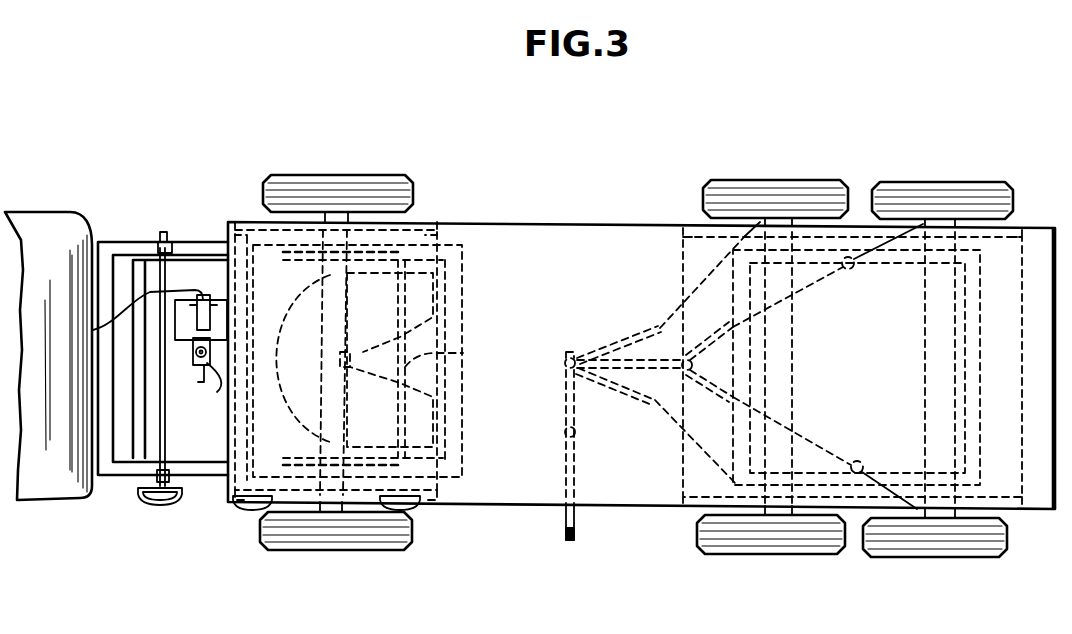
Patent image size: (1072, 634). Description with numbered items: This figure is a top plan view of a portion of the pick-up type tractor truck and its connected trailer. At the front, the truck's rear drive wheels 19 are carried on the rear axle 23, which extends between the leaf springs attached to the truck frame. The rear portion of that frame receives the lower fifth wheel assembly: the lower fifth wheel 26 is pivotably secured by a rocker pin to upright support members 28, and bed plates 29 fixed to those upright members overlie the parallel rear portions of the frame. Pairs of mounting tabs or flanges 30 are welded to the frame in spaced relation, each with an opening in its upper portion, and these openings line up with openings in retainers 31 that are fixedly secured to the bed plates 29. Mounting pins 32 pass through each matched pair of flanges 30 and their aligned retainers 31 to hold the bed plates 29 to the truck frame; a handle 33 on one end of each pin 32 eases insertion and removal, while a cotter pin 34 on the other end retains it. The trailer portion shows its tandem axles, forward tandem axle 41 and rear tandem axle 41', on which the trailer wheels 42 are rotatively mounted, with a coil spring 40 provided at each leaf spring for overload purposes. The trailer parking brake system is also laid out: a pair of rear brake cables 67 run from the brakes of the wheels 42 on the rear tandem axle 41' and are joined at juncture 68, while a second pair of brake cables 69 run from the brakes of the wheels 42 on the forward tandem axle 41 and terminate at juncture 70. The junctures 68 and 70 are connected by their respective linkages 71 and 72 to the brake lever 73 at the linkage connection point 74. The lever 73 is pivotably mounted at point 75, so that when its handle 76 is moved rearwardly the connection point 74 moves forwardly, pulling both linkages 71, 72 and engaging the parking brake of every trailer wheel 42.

The rear directionally fixed drive wheels 19 is at (395, 177).
The rear axle 23 is at (345, 323).
The lower fifth wheel 26 is at (430, 295).
The upright support members 28 is at (405, 222).
The bed plates 29 is at (197, 255).
The mounting tabs or flanges 30 is at (178, 246).
The retainers 31 is at (160, 236).
The mounting pins 32 is at (463, 353).
The handle 33 is at (153, 505).
The cotter pin 34 is at (168, 235).
The coil spring 40 is at (862, 272).
The forward tandem axle 41 is at (856, 367).
The rear tandem axle 41' is at (889, 368).
The trailer wheels 42 is at (928, 182).
The rear brake cables 67 is at (832, 280).
The juncture 68 is at (684, 378).
The second pair of brake cables 69 is at (693, 290).
The juncture 70 is at (580, 370).
The linkage 71 is at (677, 357).
The linkage 72 is at (614, 353).
The brake lever 73 is at (578, 481).
The linkage connection point 74 is at (576, 354).
The pivot point 75 is at (578, 432).
The handle 76 is at (576, 536).